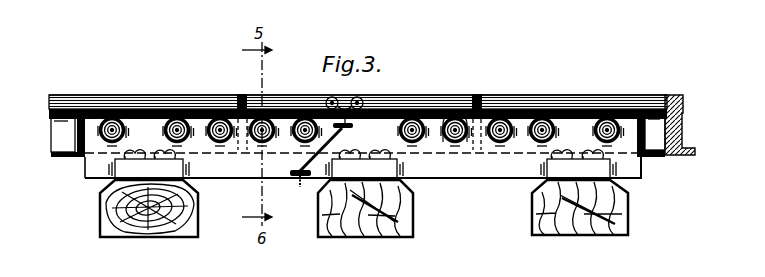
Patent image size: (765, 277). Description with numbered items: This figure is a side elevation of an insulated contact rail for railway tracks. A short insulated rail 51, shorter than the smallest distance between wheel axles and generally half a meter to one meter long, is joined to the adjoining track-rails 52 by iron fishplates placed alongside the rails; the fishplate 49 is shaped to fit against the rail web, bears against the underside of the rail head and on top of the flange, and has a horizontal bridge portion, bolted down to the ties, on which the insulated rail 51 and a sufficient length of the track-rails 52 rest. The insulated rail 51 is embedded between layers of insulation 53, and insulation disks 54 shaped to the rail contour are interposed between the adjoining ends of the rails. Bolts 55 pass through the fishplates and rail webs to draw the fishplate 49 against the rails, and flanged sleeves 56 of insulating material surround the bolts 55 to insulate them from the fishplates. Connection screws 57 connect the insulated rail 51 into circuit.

The fishplate 49 is at (86, 178).
The insulated rail 51 is at (378, 96).
The track-rails 52 is at (156, 91).
The layers of insulation 53 is at (80, 158).
The insulation disks 54 is at (241, 95).
The bolts 55 is at (452, 142).
The flanged sleeves 56 is at (461, 141).
The connection screws 57 is at (331, 97).